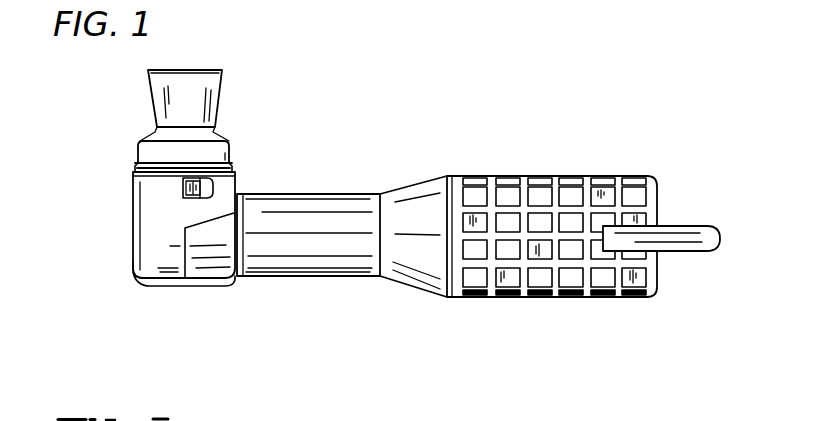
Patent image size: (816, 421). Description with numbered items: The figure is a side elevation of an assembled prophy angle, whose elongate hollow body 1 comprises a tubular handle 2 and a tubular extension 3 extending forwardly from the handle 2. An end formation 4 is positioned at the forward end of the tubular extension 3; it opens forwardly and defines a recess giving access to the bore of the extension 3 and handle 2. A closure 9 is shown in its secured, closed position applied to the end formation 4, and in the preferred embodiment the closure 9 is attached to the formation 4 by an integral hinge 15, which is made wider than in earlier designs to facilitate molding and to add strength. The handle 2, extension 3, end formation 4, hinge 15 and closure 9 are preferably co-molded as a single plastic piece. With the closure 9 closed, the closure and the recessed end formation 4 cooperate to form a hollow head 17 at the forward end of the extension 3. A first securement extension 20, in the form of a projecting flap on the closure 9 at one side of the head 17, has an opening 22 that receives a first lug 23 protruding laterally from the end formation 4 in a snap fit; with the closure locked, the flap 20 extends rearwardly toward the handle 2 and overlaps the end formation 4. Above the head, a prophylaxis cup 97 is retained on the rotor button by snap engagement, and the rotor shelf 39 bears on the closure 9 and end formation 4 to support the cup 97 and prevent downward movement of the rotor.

The elongate hollow body 1 is at (393, 160).
The tubular handle 2 is at (553, 176).
The tubular extension 3 is at (329, 194).
The end formation 4 is at (212, 259).
The closure 9 is at (157, 213).
The integral hinge 15 is at (182, 283).
The hollow head 17 is at (133, 269).
The first securement extension 20 is at (215, 190).
The opening 22 is at (183, 188).
The first lug 23 is at (213, 207).
The shelf 39 is at (140, 163).
The prophylaxis cup 97 is at (222, 96).